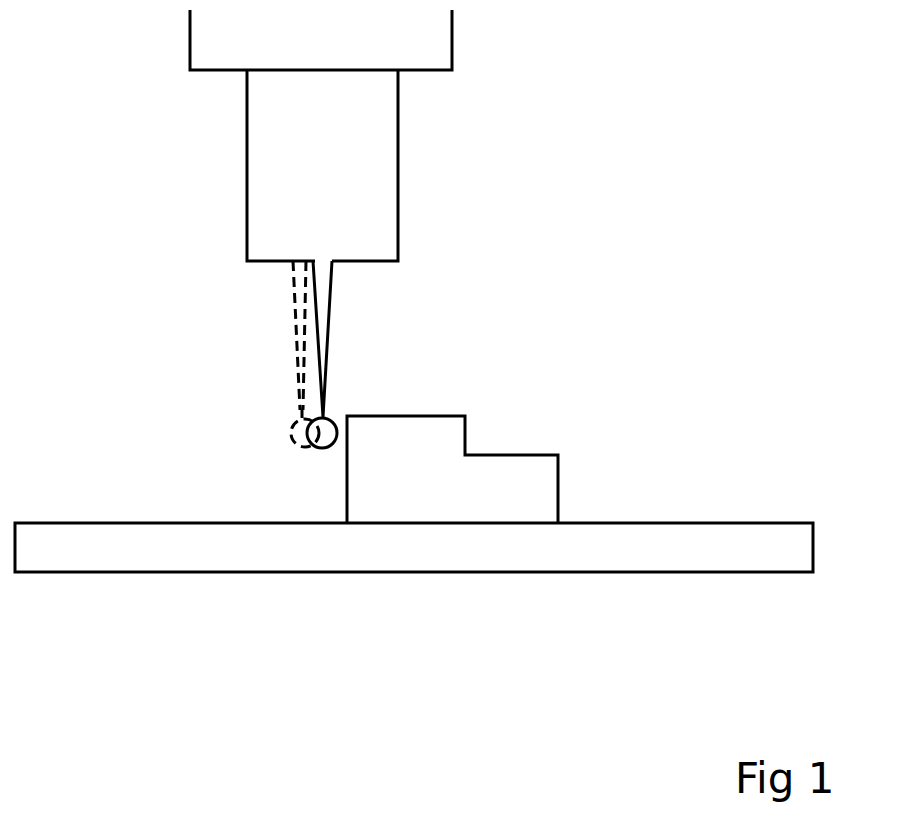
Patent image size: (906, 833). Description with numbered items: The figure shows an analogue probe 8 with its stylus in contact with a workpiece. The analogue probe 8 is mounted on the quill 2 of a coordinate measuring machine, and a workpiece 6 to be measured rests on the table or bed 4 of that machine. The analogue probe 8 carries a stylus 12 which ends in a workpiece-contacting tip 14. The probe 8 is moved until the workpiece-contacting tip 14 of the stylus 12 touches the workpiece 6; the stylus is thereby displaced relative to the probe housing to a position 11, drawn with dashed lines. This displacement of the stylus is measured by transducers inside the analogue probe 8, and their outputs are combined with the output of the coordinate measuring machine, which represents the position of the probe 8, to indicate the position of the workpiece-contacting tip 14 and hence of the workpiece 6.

The quill 2 is at (437, 45).
The analogue probe 8 is at (425, 163).
The stylus 12 is at (329, 311).
The position 11 is at (297, 327).
The workpiece-contacting tip 14 is at (323, 451).
The workpiece 6 is at (515, 449).
The table or bed 4 is at (74, 542).